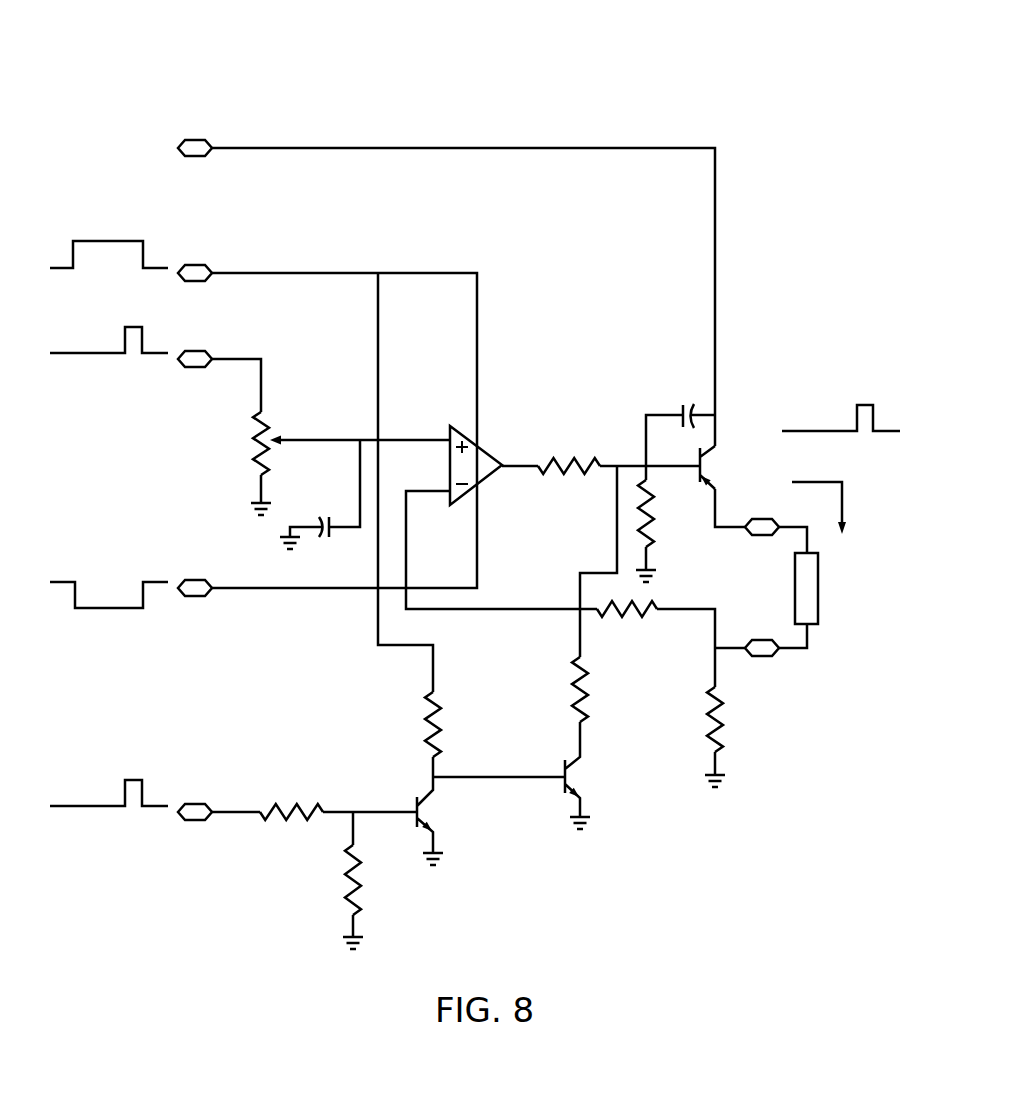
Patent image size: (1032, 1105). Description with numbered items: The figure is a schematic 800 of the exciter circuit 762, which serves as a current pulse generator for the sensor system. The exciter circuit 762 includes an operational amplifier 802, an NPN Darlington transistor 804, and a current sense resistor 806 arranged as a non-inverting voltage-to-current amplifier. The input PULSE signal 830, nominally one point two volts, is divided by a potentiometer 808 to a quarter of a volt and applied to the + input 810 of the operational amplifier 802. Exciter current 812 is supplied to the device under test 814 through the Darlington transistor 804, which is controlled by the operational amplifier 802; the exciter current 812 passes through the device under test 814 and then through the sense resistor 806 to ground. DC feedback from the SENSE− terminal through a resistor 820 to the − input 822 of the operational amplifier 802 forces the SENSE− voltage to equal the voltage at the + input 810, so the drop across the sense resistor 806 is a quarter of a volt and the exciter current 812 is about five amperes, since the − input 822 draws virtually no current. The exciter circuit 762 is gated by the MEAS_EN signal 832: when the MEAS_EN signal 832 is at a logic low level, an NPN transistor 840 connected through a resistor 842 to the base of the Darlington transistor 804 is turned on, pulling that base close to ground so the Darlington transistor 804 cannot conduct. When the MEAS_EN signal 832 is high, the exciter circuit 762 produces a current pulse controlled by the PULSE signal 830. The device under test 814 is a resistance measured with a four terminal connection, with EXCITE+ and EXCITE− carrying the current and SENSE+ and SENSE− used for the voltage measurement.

The schematic 800 is at (745, 66).
The exciter circuit 762 is at (735, 358).
The operational amplifier 802 is at (458, 423).
The Darlington transistor 804 is at (693, 478).
The current sense resistor 806 is at (727, 722).
The potentiometer 808 is at (252, 462).
The + input 810 is at (399, 439).
The exciter current 812 is at (848, 502).
The device under test 814 is at (828, 607).
The resistor 820 is at (648, 623).
The − input 822 is at (440, 492).
The PULSE signal 830 is at (117, 362).
The MEAS_EN signal 832 is at (117, 813).
The NPN transistor 840 is at (577, 777).
The resistor 842 is at (592, 710).